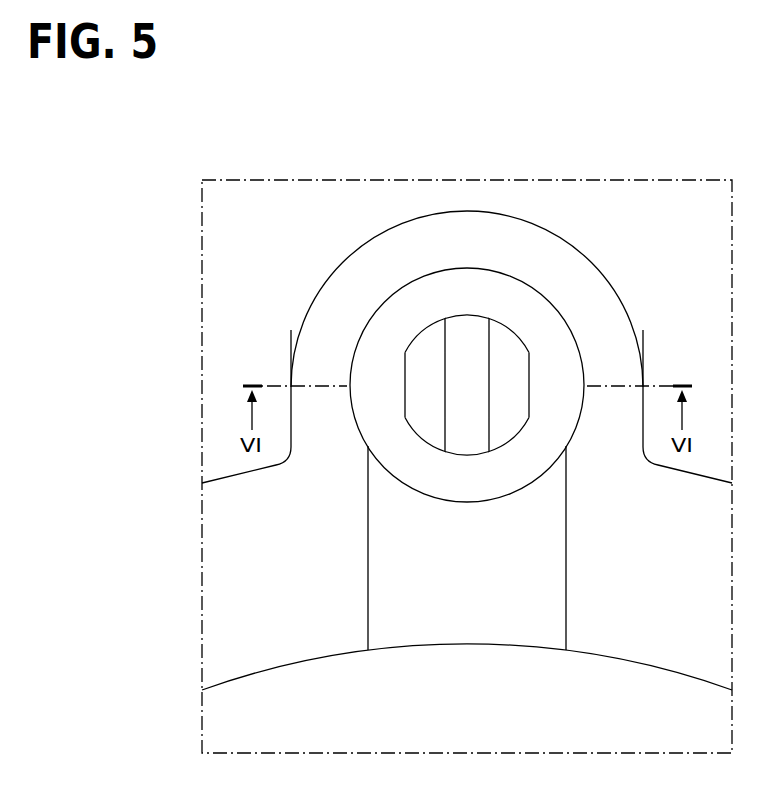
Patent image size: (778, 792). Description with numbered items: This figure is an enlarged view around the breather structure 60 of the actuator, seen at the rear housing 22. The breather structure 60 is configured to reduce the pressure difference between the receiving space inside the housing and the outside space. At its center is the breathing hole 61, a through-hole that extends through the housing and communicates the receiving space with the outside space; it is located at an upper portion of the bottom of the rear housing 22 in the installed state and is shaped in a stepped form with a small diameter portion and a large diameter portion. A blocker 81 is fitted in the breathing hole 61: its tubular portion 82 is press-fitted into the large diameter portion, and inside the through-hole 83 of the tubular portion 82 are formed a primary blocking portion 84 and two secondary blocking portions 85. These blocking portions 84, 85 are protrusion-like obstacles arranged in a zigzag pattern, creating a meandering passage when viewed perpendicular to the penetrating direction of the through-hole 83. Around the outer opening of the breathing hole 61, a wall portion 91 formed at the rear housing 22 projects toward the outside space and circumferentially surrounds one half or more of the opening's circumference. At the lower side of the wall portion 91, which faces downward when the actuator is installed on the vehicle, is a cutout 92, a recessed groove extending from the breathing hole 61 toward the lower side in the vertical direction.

The rear housing 22 is at (283, 265).
The breather structure 60 is at (459, 205).
The breathing hole 61 is at (353, 375).
The blocker 81 is at (521, 265).
The tubular portion 82 is at (553, 348).
The through-hole 83 is at (428, 332).
The primary blocking portion 84 is at (468, 372).
The secondary blocking portions 85 is at (433, 372).
The wall portion 91 is at (367, 264).
The cutout 92 is at (368, 602).